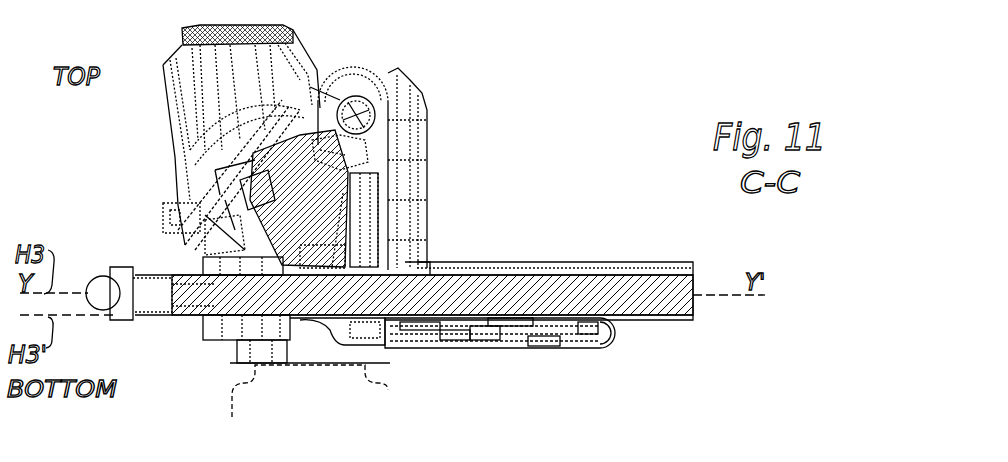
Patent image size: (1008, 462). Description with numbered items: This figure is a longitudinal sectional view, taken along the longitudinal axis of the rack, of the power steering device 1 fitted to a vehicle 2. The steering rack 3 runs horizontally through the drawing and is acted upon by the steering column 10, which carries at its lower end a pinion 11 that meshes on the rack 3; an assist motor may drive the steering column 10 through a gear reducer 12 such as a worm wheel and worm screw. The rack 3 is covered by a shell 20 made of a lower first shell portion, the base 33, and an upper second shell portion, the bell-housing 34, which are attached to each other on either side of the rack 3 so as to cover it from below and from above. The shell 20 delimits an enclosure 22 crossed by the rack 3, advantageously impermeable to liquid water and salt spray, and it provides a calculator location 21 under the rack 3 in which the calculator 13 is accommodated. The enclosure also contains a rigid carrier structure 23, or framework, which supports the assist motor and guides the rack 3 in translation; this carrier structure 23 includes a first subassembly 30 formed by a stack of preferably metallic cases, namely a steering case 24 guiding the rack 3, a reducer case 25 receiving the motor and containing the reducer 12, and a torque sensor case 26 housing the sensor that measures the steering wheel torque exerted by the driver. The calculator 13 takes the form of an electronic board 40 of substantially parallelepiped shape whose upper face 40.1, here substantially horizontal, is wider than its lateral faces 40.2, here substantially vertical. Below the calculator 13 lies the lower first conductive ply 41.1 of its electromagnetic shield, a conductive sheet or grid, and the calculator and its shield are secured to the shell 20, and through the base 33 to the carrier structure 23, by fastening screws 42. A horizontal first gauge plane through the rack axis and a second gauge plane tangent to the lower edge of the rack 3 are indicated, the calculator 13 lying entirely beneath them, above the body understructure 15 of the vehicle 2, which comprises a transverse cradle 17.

The power steering device 1 is at (424, 222).
The vehicle 2 is at (224, 403).
The steering rack 3 is at (178, 311).
The steering column 10 is at (313, 230).
The pinion 11 is at (333, 267).
The gear reducer 12 is at (355, 145).
The calculator 13 is at (556, 340).
The body understructure 15 is at (258, 392).
The cradle 17 is at (250, 385).
The shell 20 is at (615, 256).
The calculator location 21 is at (613, 333).
The enclosure 22 is at (418, 262).
The carrier structure 23 is at (221, 232).
The steering case 24 is at (365, 331).
The reducer case 25 is at (197, 207).
The torque sensor case 26 is at (237, 95).
The first subassembly 30 is at (352, 89).
The base 33 is at (677, 318).
The bell-housing 34 is at (682, 262).
The electronic board 40 is at (519, 366).
The upper face 40.1 is at (507, 313).
The lateral face 40.2 is at (487, 327).
The lower first conductive ply 41.1 is at (545, 343).
The fastening screws 42 is at (592, 328).